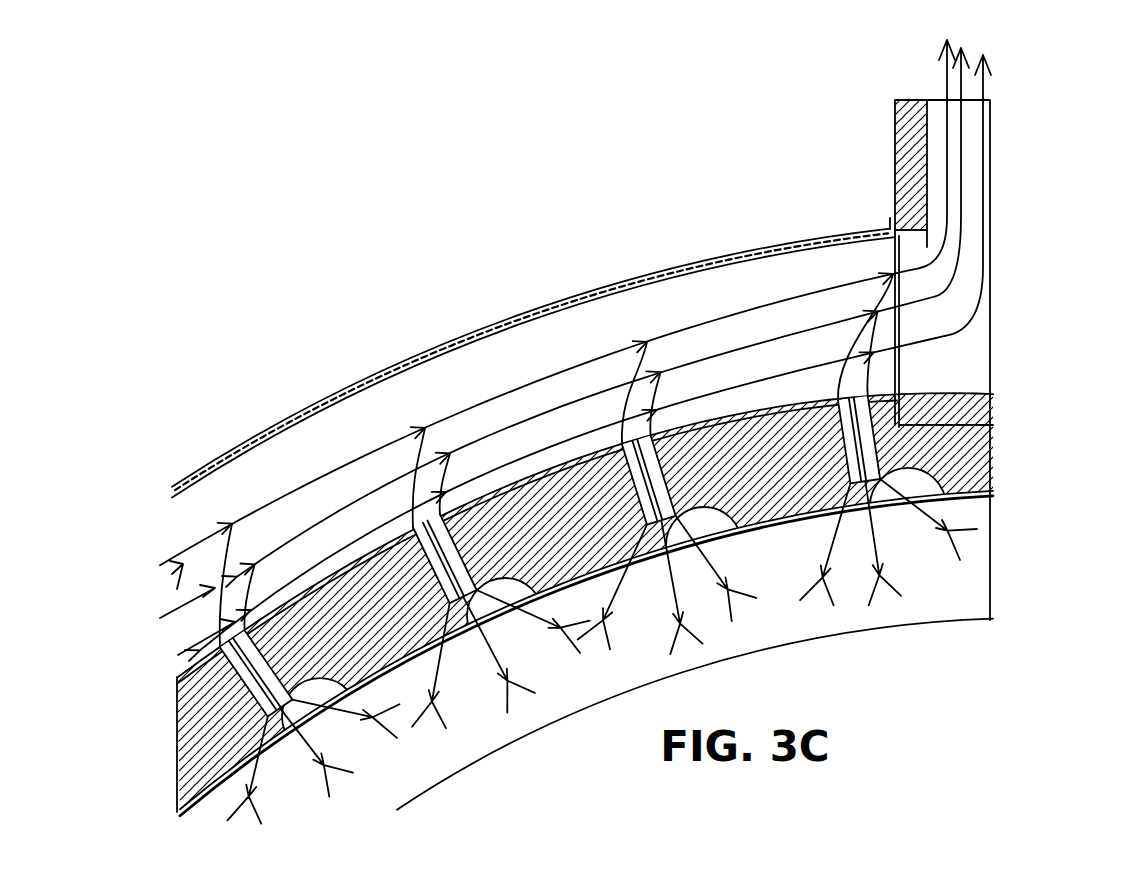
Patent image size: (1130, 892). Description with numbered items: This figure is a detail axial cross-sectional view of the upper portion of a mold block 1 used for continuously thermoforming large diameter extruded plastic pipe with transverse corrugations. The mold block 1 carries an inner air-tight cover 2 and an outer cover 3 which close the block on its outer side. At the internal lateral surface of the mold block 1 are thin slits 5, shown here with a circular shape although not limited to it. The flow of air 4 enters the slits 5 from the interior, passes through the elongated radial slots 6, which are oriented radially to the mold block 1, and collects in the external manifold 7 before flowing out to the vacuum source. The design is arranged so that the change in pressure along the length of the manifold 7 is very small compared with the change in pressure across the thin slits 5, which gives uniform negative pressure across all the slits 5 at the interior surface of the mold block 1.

The mold block 1 is at (977, 467).
The inner air-tight cover 2 is at (617, 287).
The outer cover 3 is at (333, 392).
The flow of air 4 is at (783, 337).
The slits 5 is at (607, 545).
The radial slots 6 is at (624, 450).
The external manifold 7 is at (333, 493).